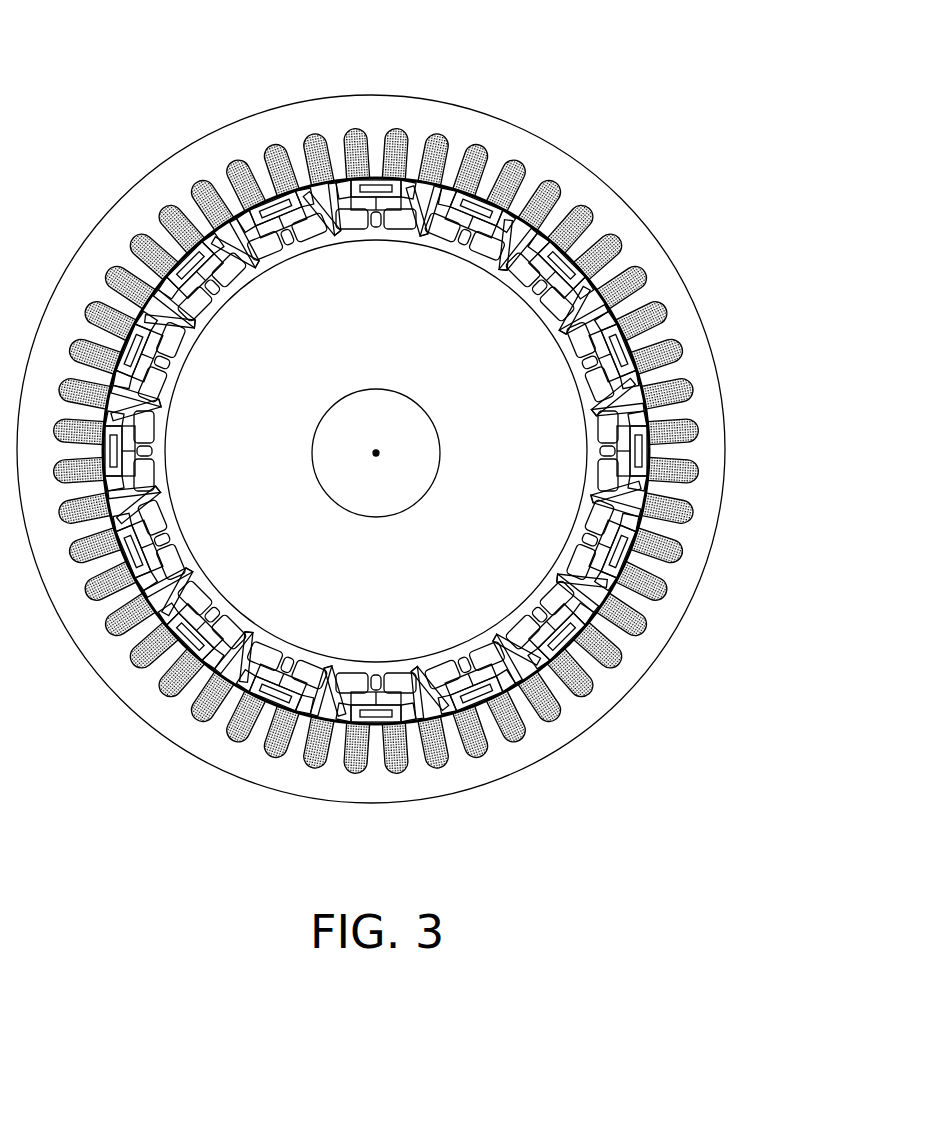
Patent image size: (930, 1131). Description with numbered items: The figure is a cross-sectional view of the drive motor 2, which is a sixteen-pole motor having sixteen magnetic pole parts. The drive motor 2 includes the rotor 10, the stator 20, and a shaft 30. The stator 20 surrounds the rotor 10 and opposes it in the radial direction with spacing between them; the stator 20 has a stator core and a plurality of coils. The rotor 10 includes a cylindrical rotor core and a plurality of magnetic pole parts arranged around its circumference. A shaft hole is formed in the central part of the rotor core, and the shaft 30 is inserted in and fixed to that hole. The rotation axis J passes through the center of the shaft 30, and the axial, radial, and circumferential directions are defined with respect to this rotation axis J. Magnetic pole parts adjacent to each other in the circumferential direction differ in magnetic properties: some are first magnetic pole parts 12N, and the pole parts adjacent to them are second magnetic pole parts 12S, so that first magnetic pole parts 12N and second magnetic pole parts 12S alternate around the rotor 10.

The drive motor 2 is at (163, 84).
The stator 20 is at (420, 122).
The rotor 10 is at (355, 656).
The first magnetic pole part 12N is at (377, 240).
The second magnetic pole part 12S is at (297, 258).
The shaft 30 is at (436, 490).
The rotation axis J is at (379, 450).